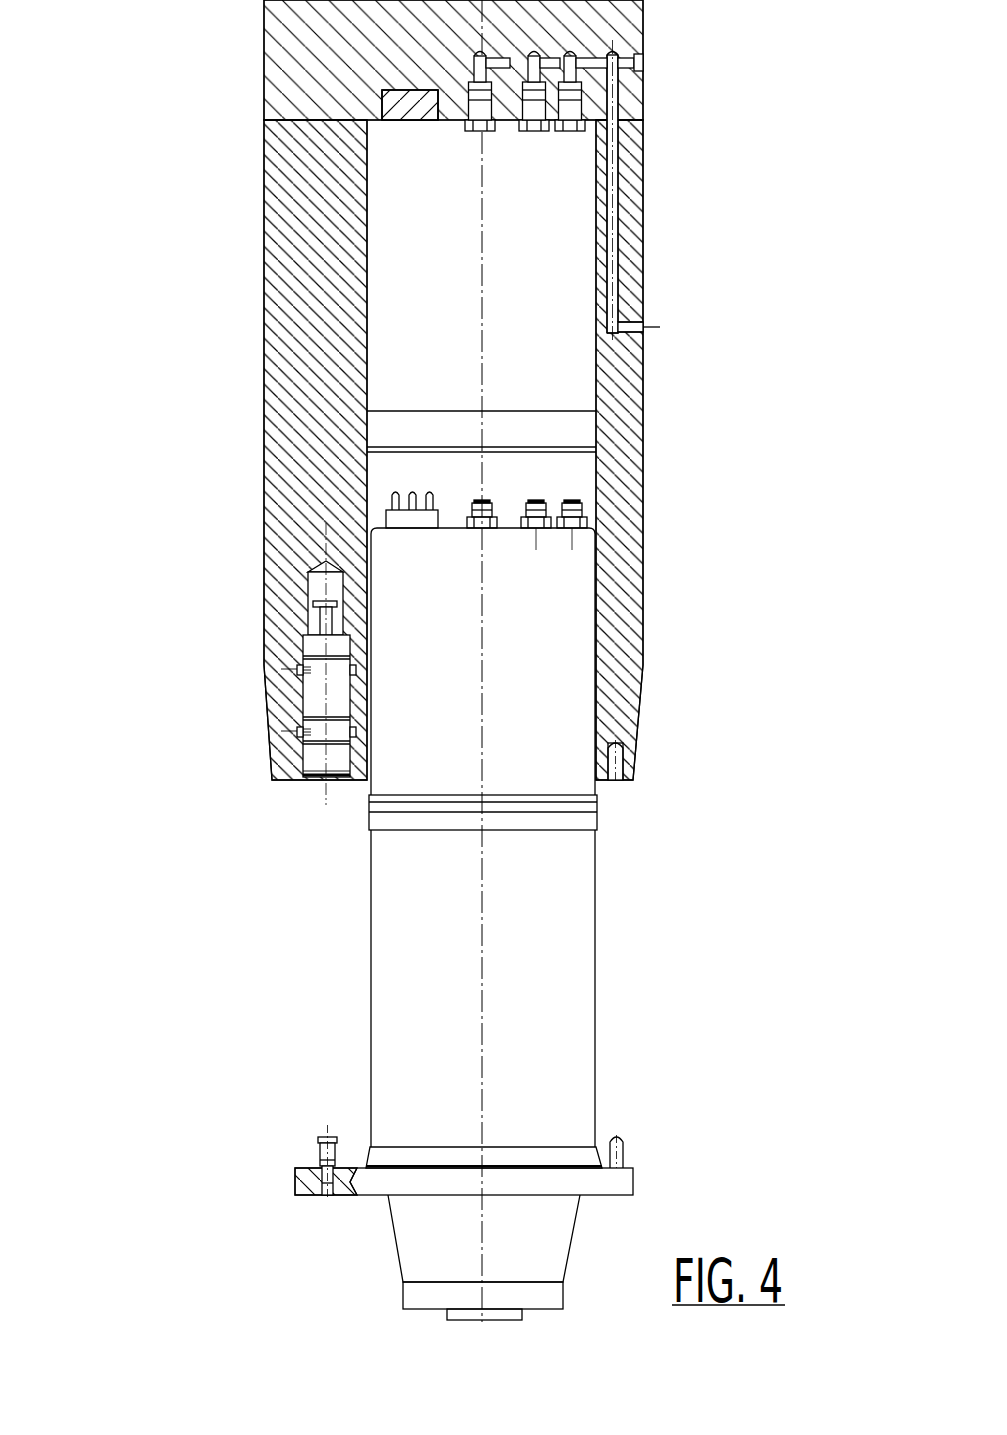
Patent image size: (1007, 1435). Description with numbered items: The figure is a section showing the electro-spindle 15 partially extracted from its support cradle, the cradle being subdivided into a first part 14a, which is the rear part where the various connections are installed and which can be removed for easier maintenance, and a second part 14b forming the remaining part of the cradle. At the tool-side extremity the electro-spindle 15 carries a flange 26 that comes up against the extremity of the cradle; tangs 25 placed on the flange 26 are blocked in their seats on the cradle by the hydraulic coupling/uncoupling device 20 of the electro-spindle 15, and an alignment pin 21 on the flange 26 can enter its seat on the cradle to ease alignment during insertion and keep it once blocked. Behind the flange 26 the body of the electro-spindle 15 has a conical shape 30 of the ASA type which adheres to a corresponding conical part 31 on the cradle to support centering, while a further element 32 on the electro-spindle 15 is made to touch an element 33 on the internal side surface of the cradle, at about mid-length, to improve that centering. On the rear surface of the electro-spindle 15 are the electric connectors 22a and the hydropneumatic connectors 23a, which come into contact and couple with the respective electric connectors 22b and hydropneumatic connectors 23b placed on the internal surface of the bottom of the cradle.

The first part of the cradle 14a is at (295, 87).
The second part of the cradle 14b is at (302, 500).
The electric connectors 22b is at (397, 121).
The electric connectors 22a is at (390, 508).
The hydropneumatic connectors 23b is at (569, 133).
The hydropneumatic connectors 23a is at (571, 503).
The centering element 33 is at (370, 420).
The hydraulic coupling/uncoupling device 20 is at (313, 758).
The conical part 31 is at (366, 778).
The centering element 32 is at (369, 822).
The electro-spindle 15 is at (565, 1065).
The conical shape 30 is at (365, 1155).
The tang 25 is at (318, 1143).
The flange 26 is at (295, 1194).
The alignment pin 21 is at (623, 1150).